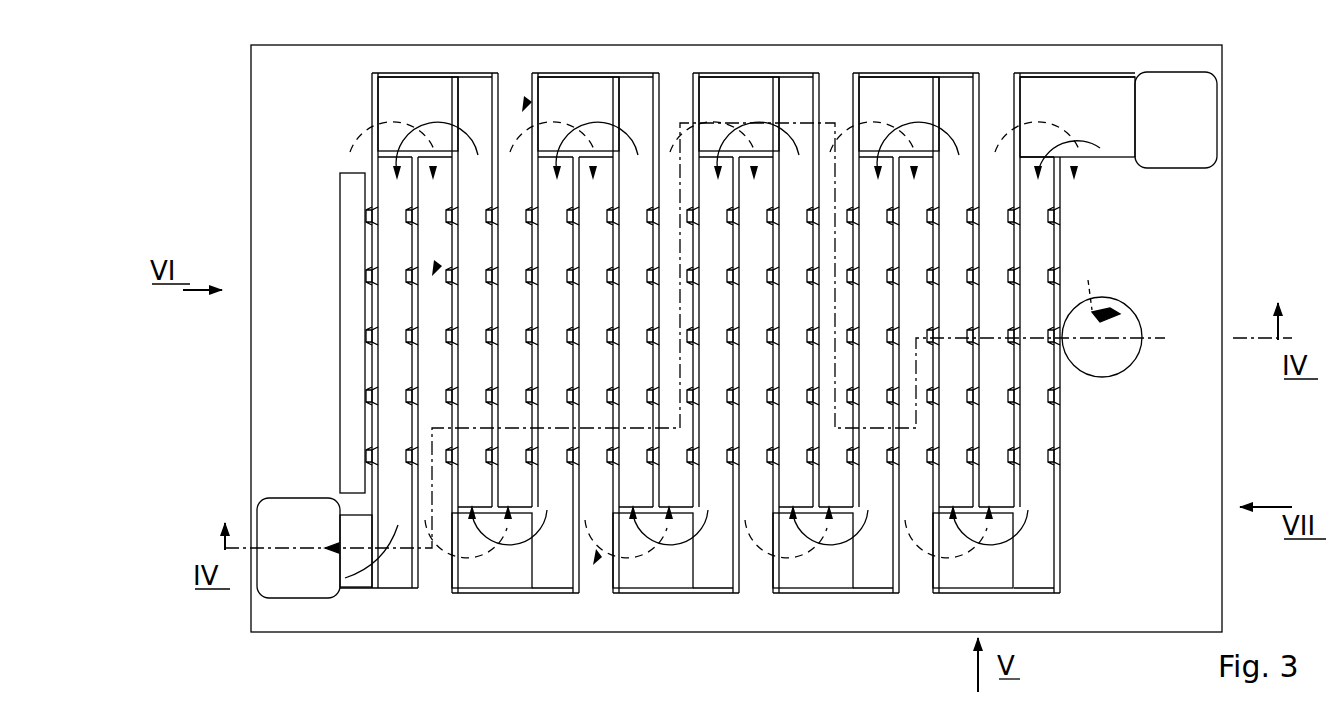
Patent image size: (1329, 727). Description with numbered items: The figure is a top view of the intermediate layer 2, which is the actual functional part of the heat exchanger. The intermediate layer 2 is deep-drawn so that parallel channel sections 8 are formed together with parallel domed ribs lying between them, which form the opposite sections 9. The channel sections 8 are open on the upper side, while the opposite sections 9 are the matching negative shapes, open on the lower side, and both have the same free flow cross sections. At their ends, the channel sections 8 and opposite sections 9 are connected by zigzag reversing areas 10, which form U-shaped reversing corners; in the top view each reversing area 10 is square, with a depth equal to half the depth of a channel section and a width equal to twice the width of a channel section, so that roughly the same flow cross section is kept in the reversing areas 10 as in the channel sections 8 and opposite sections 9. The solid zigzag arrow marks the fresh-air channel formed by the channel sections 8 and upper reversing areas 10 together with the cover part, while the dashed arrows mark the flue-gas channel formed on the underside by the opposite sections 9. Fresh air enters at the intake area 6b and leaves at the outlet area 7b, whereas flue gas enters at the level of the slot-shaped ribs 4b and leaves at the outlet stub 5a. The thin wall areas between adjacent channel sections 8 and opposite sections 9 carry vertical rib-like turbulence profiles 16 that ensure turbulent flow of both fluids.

The intermediate layer 2 is at (268, 163).
The slot-shaped ribs 4b is at (345, 318).
The outlet stub 5a is at (1128, 368).
The intake area 6b is at (1142, 142).
The outlet area 7b is at (290, 520).
The channel sections 8 is at (1044, 373).
The opposite sections 9 is at (522, 110).
The reversing areas 10 is at (398, 100).
The turbulence profiles 16 is at (412, 458).